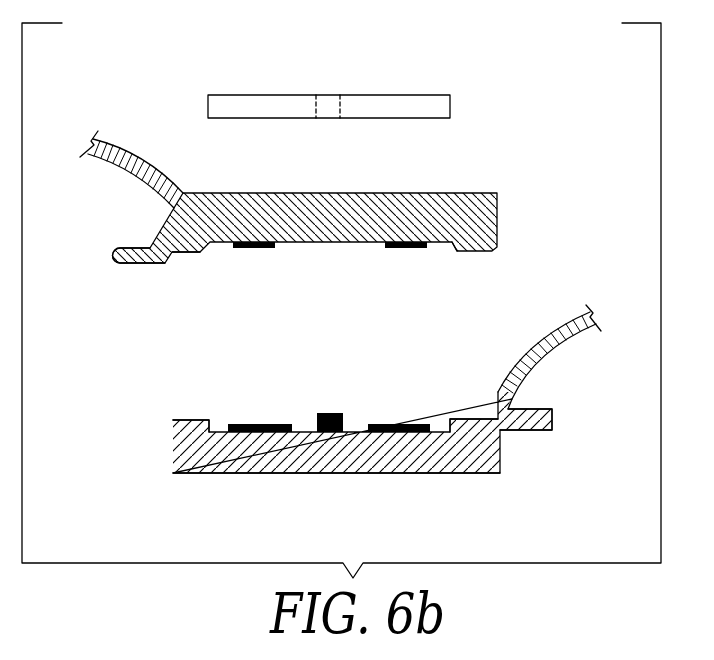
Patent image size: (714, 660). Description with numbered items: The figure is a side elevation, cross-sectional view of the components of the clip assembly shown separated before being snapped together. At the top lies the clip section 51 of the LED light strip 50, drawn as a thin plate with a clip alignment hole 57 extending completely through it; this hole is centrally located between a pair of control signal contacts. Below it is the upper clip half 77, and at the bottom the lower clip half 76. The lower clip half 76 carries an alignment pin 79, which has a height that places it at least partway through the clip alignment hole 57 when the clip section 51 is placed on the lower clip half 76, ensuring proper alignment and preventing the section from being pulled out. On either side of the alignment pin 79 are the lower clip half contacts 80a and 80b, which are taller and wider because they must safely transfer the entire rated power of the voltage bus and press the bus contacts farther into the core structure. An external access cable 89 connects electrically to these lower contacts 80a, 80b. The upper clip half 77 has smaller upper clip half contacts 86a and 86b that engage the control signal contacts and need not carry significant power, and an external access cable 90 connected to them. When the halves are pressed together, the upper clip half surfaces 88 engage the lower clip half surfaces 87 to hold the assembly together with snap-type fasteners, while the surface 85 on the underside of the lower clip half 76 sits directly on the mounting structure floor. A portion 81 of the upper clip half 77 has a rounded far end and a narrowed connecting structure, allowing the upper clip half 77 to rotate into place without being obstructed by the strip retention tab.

The LED light strip 50 is at (428, 106).
The clip section 51 is at (376, 94).
The clip alignment hole 57 is at (328, 103).
The upper clip half 77 is at (482, 227).
The lower clip half 76 is at (183, 440).
The alignment pin 79 is at (330, 413).
The lower clip half contact 80a is at (400, 424).
The lower clip half contact 80b is at (267, 422).
The upper clip half contact 86a is at (402, 247).
The upper clip half contact 86b is at (247, 249).
The portion of upper clip half 81 is at (116, 243).
The surface of underside of lower clip half 85 is at (364, 480).
The lower clip half surface 87 is at (190, 413).
The upper clip half surface 88 is at (186, 258).
The external access cable 89 is at (558, 348).
The external access cable 90 is at (110, 163).